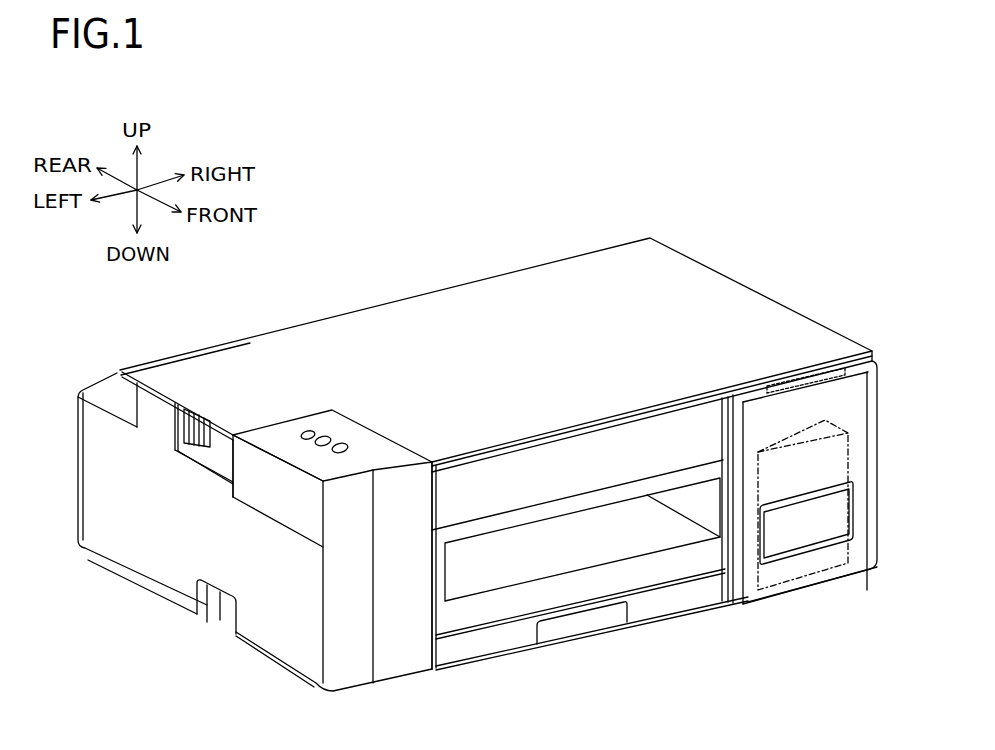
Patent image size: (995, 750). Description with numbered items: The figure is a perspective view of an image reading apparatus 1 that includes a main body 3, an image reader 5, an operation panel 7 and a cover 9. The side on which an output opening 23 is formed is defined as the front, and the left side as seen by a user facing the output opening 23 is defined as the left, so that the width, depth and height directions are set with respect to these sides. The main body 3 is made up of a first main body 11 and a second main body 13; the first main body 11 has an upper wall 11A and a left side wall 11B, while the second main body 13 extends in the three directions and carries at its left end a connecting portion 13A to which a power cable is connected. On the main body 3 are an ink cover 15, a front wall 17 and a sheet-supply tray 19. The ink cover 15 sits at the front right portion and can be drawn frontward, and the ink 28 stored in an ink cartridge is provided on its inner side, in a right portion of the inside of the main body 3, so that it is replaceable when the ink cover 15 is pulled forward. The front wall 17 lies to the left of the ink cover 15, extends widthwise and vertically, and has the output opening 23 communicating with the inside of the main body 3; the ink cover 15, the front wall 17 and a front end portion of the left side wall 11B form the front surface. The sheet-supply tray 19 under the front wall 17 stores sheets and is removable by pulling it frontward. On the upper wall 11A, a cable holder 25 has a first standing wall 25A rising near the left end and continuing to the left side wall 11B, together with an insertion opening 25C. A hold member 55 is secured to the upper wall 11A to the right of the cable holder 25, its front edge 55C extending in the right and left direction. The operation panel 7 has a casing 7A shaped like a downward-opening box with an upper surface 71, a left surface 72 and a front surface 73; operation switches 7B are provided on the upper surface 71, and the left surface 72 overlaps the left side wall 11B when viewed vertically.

The image reading apparatus 1 is at (715, 166).
The main body 3 is at (92, 378).
The image reader 5 is at (689, 411).
The operation panel 7 is at (347, 560).
The casing 7A is at (270, 499).
The operation switches 7B is at (317, 432).
The cover 9 is at (707, 270).
The first main body 11 is at (103, 475).
The upper wall 11A is at (100, 393).
The left side wall 11B is at (260, 632).
The second main body 13 is at (143, 583).
The connecting portion 13A is at (203, 612).
The ink cover 15 is at (817, 398).
The front wall 17 is at (680, 557).
The sheet-supply tray 19 is at (520, 633).
The output opening 23 is at (603, 547).
The cable holder 25 is at (183, 412).
The first standing wall 25A is at (157, 410).
The insertion opening 25C is at (190, 447).
The ink 28 is at (823, 563).
The hold member 55 is at (603, 440).
The front edge 55C is at (577, 564).
The upper surface 71 is at (370, 447).
The left surface 72 is at (297, 513).
The front surface 73 is at (393, 527).